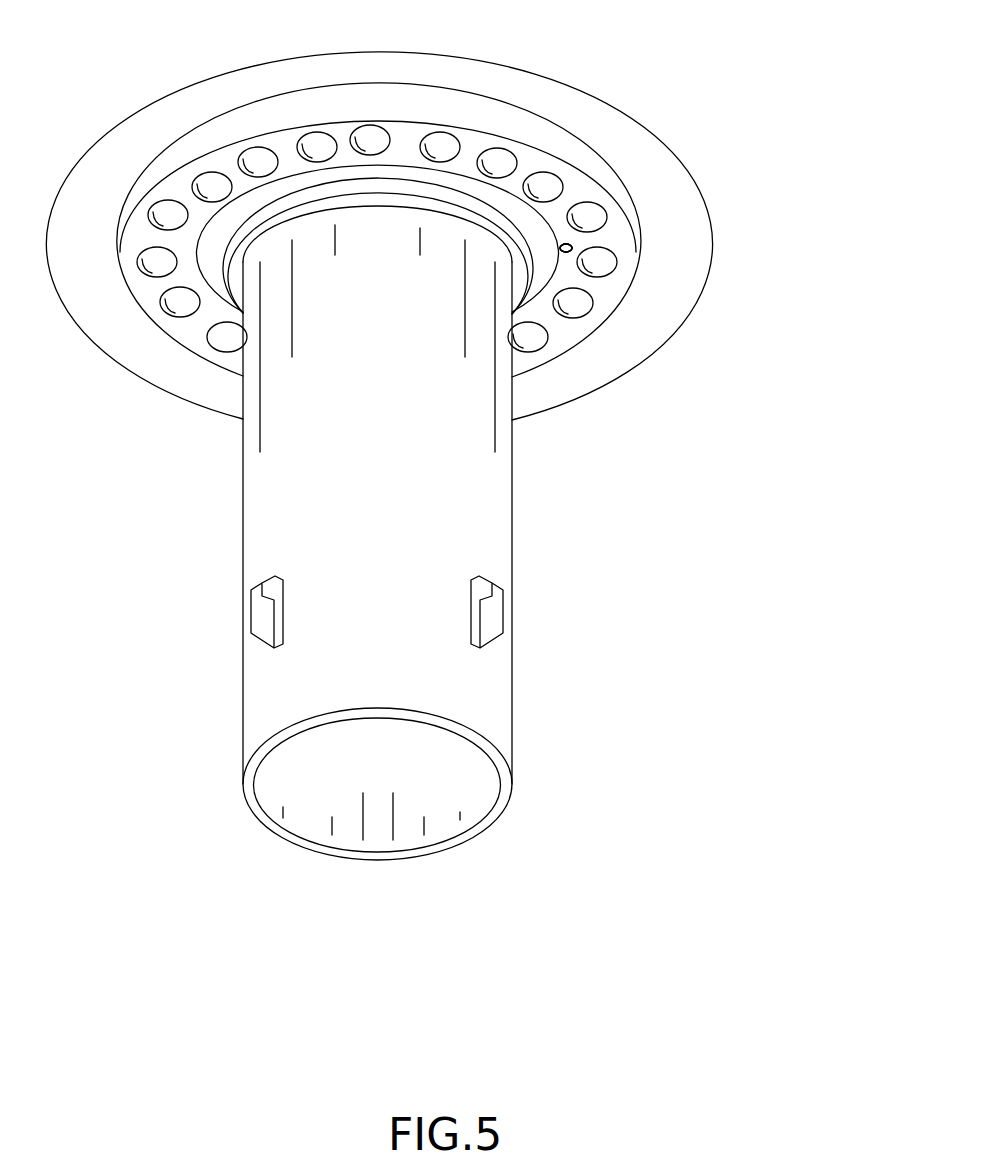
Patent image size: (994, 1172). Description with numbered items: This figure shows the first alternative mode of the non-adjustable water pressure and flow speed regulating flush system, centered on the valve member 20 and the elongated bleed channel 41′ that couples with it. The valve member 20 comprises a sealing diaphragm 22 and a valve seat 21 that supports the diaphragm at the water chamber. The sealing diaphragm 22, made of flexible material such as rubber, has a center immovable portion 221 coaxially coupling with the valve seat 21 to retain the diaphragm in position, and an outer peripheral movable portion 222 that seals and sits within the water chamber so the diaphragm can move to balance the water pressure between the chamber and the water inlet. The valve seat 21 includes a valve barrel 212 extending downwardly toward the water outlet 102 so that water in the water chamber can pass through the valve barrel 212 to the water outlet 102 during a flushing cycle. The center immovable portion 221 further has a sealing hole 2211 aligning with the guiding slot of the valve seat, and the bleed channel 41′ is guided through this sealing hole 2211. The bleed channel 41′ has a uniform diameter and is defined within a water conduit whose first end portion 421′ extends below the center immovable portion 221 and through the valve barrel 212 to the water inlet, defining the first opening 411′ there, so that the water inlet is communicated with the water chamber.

The valve member 20 is at (443, 458).
The valve seat 21 is at (487, 557).
The valve barrel 212 is at (438, 505).
The sealing diaphragm 22 is at (439, 305).
The center immovable portion 221 is at (553, 323).
The sealing hole 2211 is at (558, 240).
The outer peripheral movable portion 222 is at (667, 320).
The water outlet 102 is at (437, 795).
The elongated bleed channel 41′ is at (743, 103).
The first opening 411′ is at (582, 247).
The first end portion 421′ is at (566, 240).